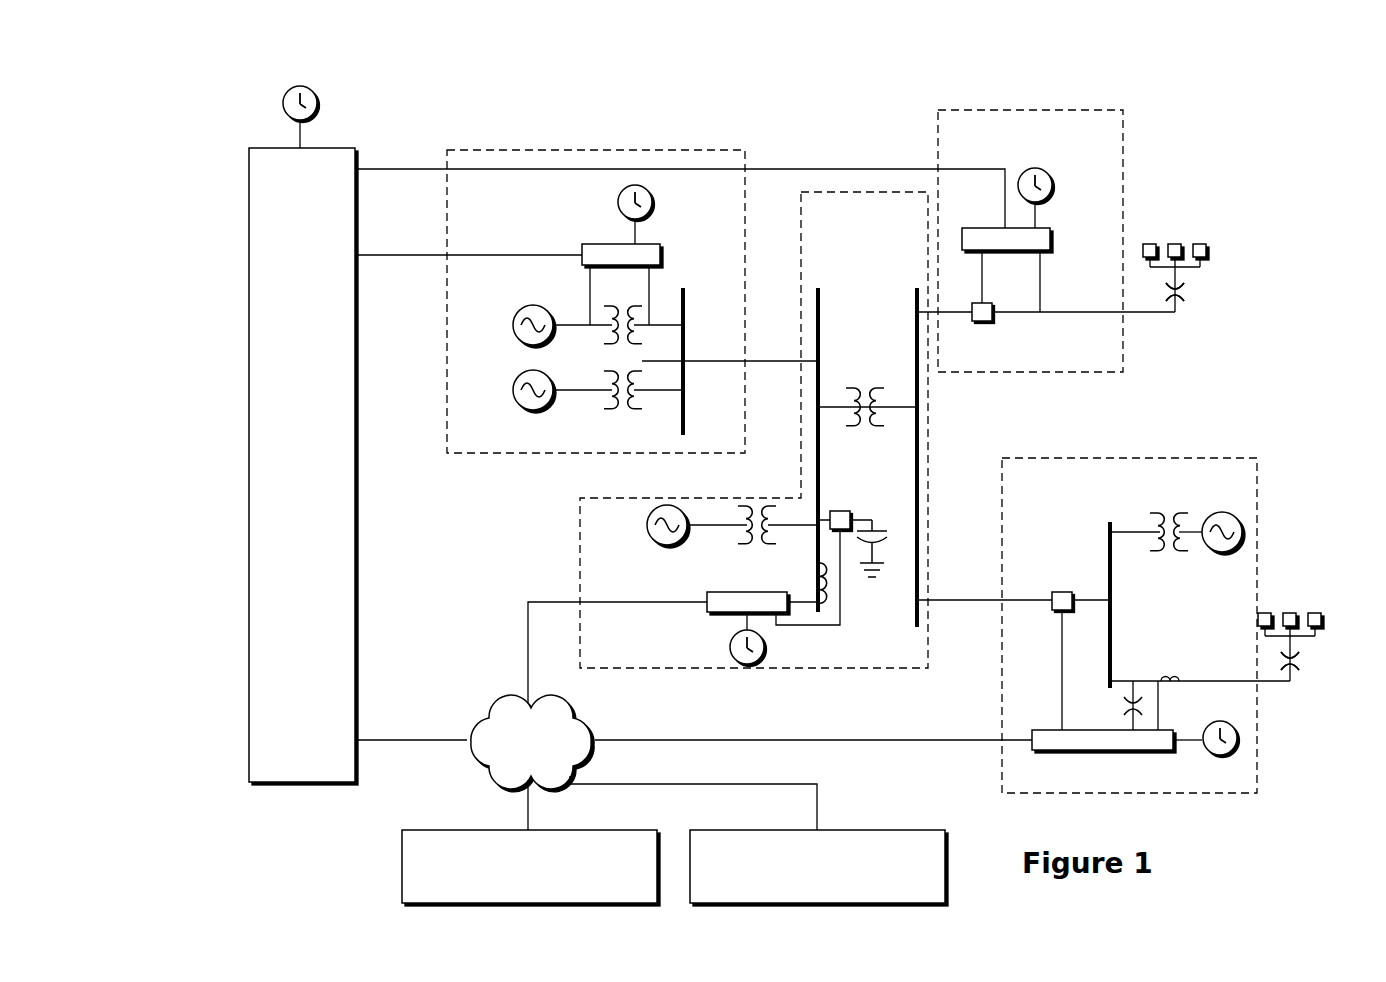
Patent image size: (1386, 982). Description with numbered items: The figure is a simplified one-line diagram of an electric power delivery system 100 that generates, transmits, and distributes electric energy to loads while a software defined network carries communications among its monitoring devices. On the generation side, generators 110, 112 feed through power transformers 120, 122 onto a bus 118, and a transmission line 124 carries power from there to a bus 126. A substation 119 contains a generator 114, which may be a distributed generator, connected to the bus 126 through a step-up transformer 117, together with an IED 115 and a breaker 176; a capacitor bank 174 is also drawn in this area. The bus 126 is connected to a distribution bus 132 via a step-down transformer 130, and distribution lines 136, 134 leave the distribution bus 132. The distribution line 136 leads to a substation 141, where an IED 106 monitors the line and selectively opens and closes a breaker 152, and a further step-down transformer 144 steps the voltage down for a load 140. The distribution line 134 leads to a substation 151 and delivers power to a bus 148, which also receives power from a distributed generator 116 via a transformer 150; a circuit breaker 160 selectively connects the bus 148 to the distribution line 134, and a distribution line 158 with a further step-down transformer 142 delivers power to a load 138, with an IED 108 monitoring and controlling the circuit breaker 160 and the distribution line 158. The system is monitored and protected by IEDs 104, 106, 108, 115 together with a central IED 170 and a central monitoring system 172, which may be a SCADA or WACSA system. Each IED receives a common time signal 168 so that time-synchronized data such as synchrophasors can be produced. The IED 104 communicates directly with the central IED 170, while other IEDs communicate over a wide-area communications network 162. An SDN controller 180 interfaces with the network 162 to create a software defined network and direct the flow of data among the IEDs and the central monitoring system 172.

The electric power delivery system 100 is at (1240, 166).
The IED 104 is at (600, 244).
The IED 106 is at (982, 228).
The IED 108 is at (1145, 752).
The generator 110 is at (513, 322).
The generator 112 is at (513, 387).
The generator 114 is at (647, 526).
The IED 115 is at (778, 592).
The distributed generator 116 is at (1212, 553).
The step-up transformer 117 is at (740, 535).
The bus 118 is at (688, 420).
The substation 119 is at (692, 668).
The transformer 120 is at (598, 336).
The transformer 122 is at (622, 411).
The transmission line 124 is at (770, 363).
The bus 126 is at (822, 430).
The step-down transformer 130 is at (868, 388).
The distribution bus 132 is at (912, 590).
The distribution line 134 is at (1012, 603).
The distribution line 136 is at (952, 315).
The load 138 is at (1292, 610).
The load 140 is at (1208, 253).
The substation 141 is at (1098, 372).
The step-down transformer 142 is at (1303, 664).
The step-down transformer 144 is at (1190, 296).
The bus 148 is at (1105, 523).
The transformer 150 is at (1170, 515).
The substation 151 is at (1200, 793).
The breaker 152 is at (992, 322).
The distribution line 158 is at (1202, 676).
The circuit breaker 160 is at (1058, 592).
The communications network 162 is at (518, 761).
The common time signal 168 is at (318, 102).
The central IED 170 is at (289, 500).
The central monitoring system 172 is at (516, 888).
The capacitor bank 174 is at (882, 528).
The breaker 176 is at (846, 509).
The SDN controller 180 is at (803, 888).